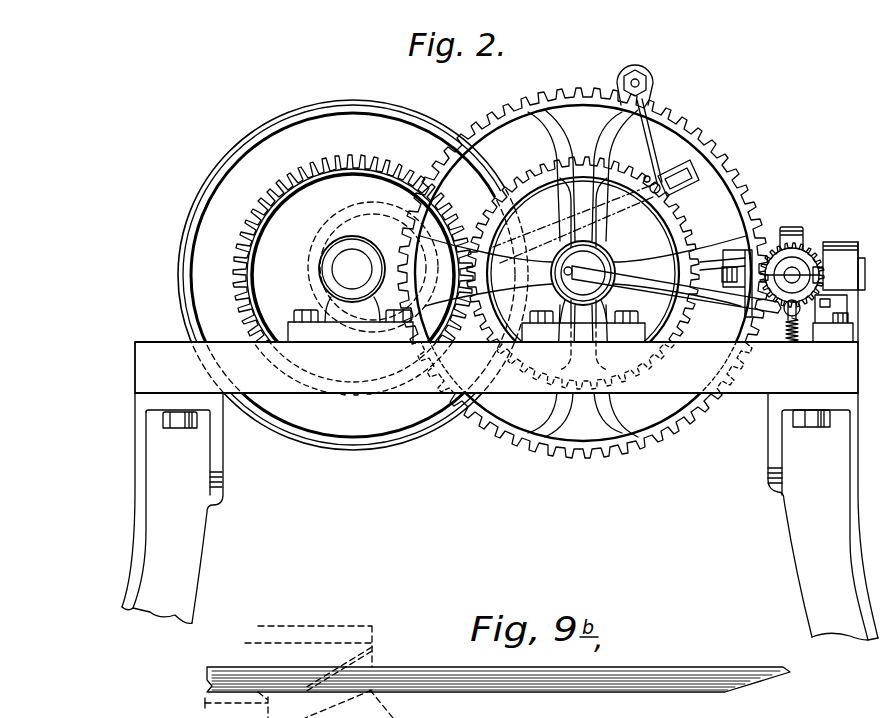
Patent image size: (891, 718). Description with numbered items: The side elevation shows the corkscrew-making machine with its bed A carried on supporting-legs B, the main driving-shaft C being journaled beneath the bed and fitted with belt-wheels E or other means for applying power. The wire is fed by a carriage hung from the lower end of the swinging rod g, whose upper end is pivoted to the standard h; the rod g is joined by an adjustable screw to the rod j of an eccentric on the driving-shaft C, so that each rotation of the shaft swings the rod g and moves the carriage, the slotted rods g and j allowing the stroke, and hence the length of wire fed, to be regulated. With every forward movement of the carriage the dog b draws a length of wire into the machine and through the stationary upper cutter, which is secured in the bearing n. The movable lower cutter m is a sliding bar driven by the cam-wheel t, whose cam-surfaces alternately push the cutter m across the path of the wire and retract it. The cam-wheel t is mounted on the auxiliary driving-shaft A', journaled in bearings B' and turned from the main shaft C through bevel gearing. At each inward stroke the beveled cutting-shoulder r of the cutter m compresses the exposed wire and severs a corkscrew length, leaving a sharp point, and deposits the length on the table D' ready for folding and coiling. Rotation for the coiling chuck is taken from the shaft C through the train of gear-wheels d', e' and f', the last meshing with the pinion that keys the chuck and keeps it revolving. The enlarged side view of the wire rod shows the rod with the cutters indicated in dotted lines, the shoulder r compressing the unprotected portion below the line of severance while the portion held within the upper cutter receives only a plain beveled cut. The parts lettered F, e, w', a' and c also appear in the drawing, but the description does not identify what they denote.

In FIG. 2, the bed A is at (496, 317).
In FIG. 2, the supporting-legs B is at (500, 516).
In FIG. 2, the main driving-shaft C is at (350, 289).
In FIG. 2, the fly-wheel F is at (353, 275).
In FIG. 2, the gear-wheel d' is at (353, 274).
In FIG. 2, the gear-wheel e' is at (583, 271).
In FIG. 2, the gear-wheel f' is at (583, 273).
In FIG. 2, the standard h is at (626, 104).
In FIG. 2, the swinging rod g is at (649, 146).
In FIG. 2, the rod of the eccentric j is at (679, 183).
In FIG. 2, the cam-wheel t is at (726, 283).
In FIG. 2, the arm e is at (723, 272).
In FIG. 2, the lever w' is at (686, 289).
In FIG. 2, the ratchet wheel a' is at (792, 264).
In FIG. 2, the bearings B' is at (835, 266).
In FIG. 2, the auxiliary driving-shaft A' is at (870, 274).
In FIG. 2, the table D' is at (833, 310).
In FIG. 2, the spring c is at (797, 330).
In FIG. 9B, the belt-wheels E is at (447, 690).
In FIG. 9B, the bearing n is at (374, 633).
In FIG. 9B, the beveled cutting-shoulder r is at (334, 677).
In FIG. 9B, the dog b is at (235, 705).
In FIG. 9B, the movable lower cutter m is at (349, 704).